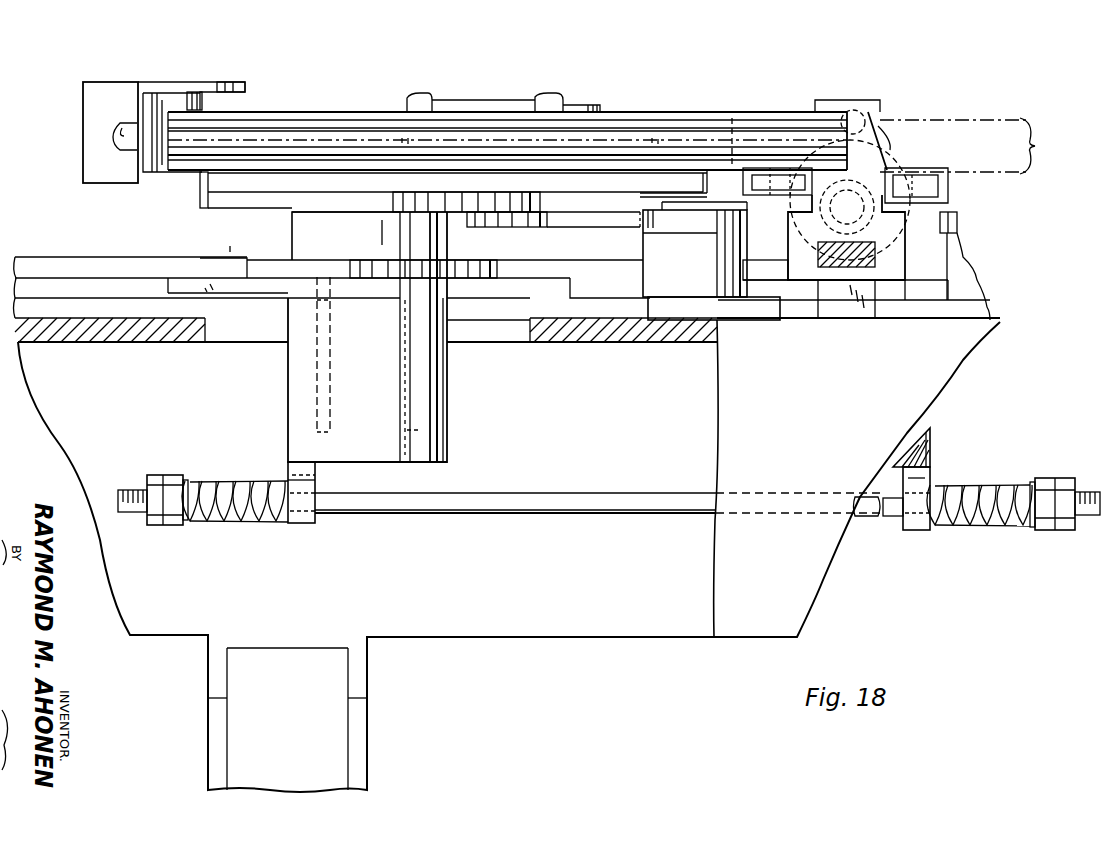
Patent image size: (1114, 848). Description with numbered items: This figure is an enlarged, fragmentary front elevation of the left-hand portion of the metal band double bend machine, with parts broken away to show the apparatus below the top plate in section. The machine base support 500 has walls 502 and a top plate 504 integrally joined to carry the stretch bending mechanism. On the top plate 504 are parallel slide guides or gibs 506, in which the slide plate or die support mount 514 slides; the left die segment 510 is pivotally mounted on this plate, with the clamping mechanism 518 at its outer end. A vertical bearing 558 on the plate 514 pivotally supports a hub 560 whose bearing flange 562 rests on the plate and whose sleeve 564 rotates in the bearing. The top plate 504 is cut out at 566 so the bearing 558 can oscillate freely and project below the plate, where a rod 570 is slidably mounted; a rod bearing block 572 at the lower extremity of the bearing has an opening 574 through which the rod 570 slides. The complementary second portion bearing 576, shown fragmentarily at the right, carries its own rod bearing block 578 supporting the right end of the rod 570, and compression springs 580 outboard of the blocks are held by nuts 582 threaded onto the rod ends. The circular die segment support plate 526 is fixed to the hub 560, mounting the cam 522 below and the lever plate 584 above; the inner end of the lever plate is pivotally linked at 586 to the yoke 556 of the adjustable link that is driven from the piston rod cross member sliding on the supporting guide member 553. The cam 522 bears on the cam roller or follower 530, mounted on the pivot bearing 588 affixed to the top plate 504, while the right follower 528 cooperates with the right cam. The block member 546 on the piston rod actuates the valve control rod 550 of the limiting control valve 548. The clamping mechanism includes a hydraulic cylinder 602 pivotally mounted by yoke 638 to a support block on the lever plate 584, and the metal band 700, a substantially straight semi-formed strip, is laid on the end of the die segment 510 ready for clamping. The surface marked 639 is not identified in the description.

The machine base support 500 is at (810, 611).
The walls 502 is at (958, 368).
The top plate 504 is at (57, 334).
The slide guides or gibs 506 is at (48, 257).
The left die segment 510 is at (350, 110).
The slide plate or die support mount 514 is at (180, 276).
The clamping mechanism 518 is at (115, 82).
The left cam 522 is at (508, 224).
The circular die segment support plate 526 is at (200, 204).
The right cam roller or follower 528 is at (957, 219).
The left cam roller or follower 530 is at (664, 238).
The block member 546 is at (878, 118).
The limiting control valve 548 is at (868, 100).
The valve control rod 550 is at (855, 112).
The supporting guide member 553 is at (826, 274).
The yokes 556 is at (772, 198).
The vertical bearing 558 is at (448, 398).
The hub 560 is at (296, 223).
The bearing flange 562 is at (258, 262).
The sleeve 564 is at (318, 388).
The cutout 566 is at (207, 330).
The rod 570 is at (608, 513).
The rod bearing block 572 is at (316, 483).
The opening 574 is at (300, 524).
The complementary second portion bearing 576 is at (930, 448).
The rod bearing block 578 is at (930, 473).
The compression springs 580 is at (238, 520).
The nuts 582 is at (160, 524).
The lever plate 584 is at (591, 186).
The pivot link 586 is at (948, 144).
The pivot bearing 588 is at (690, 288).
The hydraulic piston type cylinder 602 is at (462, 100).
The yoke 638 is at (590, 108).
The curved surface 639 is at (891, 143).
The metal band 700 is at (113, 140).